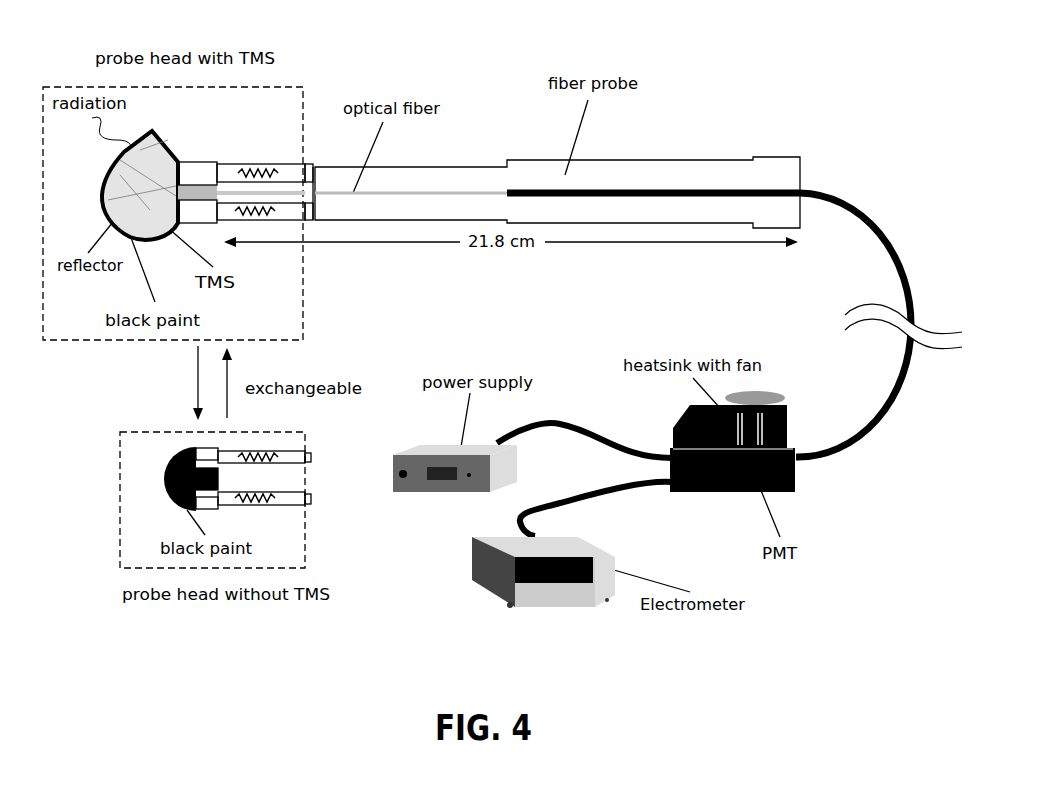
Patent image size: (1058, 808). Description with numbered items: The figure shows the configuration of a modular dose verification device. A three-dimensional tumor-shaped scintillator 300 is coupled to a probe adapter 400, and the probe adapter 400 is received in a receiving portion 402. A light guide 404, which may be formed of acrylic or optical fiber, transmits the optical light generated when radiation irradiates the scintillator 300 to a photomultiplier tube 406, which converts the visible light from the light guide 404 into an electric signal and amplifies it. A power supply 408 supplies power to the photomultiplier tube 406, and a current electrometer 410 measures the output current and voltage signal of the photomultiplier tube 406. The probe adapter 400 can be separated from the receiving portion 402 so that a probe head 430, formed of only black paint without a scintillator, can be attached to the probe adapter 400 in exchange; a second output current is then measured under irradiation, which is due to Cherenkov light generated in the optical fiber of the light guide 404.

The 3D tumor-shaped scintillator 300 is at (173, 148).
The probe adapter 400 is at (205, 162).
The receiving portion 402 is at (321, 190).
The light guide 404 is at (680, 160).
The photomultiplier tube (PMT) 406 is at (800, 486).
The power supply 408 is at (432, 493).
The current electrometer 410 is at (540, 598).
The probe head 430 is at (162, 478).